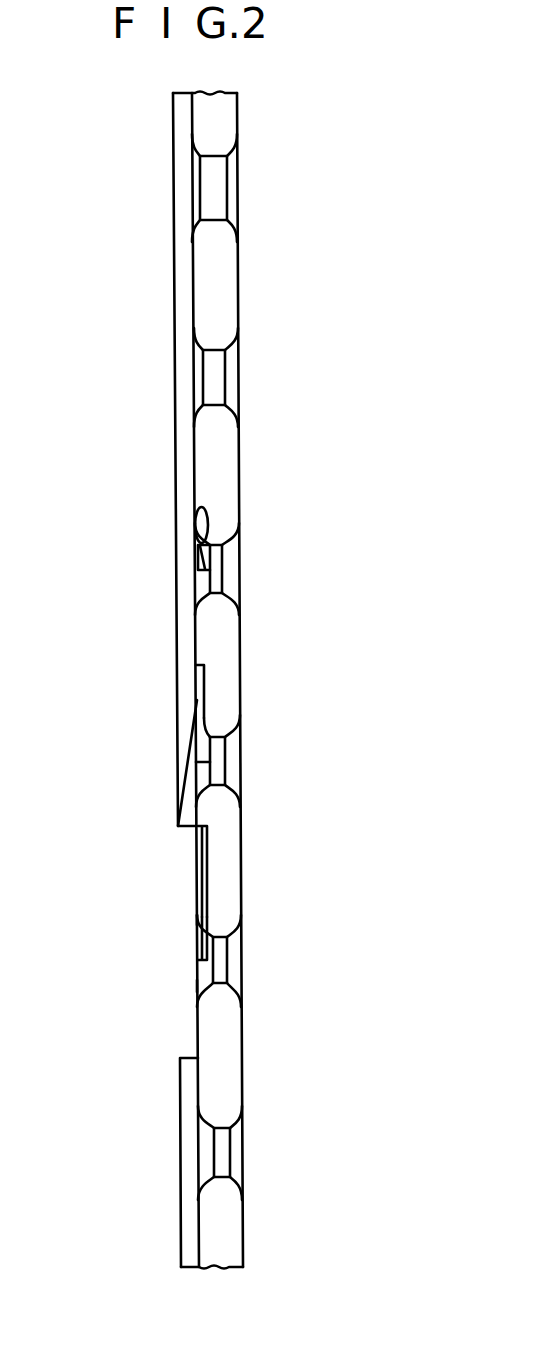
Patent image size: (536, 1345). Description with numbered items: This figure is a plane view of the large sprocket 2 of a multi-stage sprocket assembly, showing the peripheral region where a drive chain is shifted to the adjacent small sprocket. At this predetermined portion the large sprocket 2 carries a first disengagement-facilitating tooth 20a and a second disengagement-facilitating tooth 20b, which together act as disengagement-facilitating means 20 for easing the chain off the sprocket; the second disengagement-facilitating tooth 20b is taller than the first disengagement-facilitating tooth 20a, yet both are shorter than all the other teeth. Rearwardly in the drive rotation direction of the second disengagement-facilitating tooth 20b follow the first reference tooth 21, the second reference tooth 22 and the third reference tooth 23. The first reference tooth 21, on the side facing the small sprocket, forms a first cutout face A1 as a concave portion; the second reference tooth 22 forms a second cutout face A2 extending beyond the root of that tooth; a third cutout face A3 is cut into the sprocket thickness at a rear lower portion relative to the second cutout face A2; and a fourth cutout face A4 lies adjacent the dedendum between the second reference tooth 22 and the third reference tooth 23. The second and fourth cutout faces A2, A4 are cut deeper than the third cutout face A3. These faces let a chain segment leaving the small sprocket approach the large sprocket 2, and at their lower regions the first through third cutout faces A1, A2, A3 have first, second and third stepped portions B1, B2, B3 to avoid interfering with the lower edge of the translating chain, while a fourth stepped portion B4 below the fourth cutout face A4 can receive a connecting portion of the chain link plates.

The large sprocket 2 is at (175, 393).
The disengagement-facilitating means 20 is at (303, 280).
The first disengagement-facilitating tooth 20a is at (228, 200).
The second disengagement-facilitating tooth 20b is at (230, 362).
The first reference tooth 21 is at (230, 575).
The second reference tooth 22 is at (232, 763).
The third reference tooth 23 is at (233, 965).
The first cutout face A1 is at (207, 530).
The second cutout face A2 is at (203, 740).
The third cutout face A3 is at (198, 985).
The fourth cutout face A4 is at (198, 920).
The first stepped portion B1 is at (198, 555).
The second stepped portion B2 is at (198, 688).
The third stepped portion B3 is at (190, 828).
The fourth stepped portion B4 is at (198, 868).